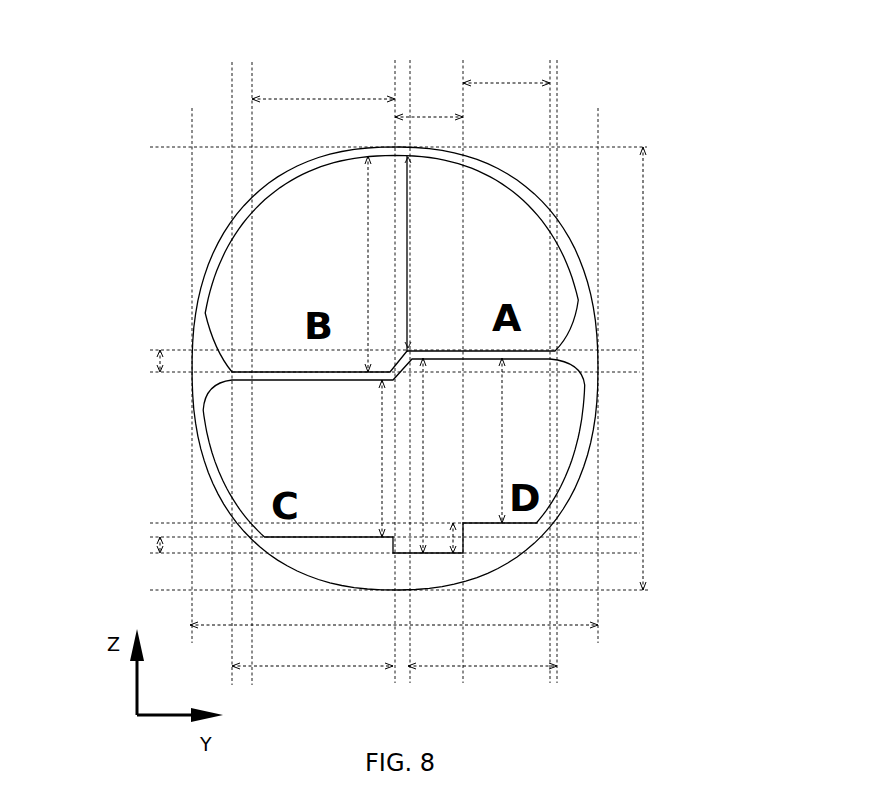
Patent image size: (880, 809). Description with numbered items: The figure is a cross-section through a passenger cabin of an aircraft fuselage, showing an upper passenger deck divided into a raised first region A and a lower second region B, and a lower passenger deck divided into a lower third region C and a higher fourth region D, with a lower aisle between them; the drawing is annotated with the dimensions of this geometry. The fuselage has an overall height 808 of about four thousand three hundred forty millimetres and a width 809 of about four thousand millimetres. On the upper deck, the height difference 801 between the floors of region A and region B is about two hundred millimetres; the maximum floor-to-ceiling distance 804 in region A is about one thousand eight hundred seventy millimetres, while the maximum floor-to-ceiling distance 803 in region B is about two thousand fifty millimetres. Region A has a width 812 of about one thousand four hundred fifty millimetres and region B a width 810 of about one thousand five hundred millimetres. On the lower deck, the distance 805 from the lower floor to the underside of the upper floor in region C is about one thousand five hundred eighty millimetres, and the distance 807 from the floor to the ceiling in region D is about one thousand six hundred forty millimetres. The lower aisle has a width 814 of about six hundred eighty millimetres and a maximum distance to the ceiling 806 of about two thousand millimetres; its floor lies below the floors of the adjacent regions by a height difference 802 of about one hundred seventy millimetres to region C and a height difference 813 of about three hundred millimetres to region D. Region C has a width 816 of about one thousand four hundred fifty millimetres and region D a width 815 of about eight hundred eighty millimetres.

The height difference 801 is at (157, 357).
The height difference 802 is at (157, 546).
The maximum distance from the floor to the ceiling 803 is at (368, 207).
The maximum distance from the floor to the ceiling 804 is at (410, 298).
The distance from the lower floor to the underside of the upper floor 805 is at (382, 405).
The maximum distance to the ceiling in the lower aisle region 806 is at (423, 436).
The distance from the lower floor to the ceiling 807 is at (502, 437).
The height of the fuselage 808 is at (643, 279).
The width of the fuselage 809 is at (297, 629).
The width of the second region B of the upper passenger deck 810 is at (297, 668).
The width of the first region A of the upper passenger deck 812 is at (480, 668).
The height difference 813 is at (455, 535).
The width of the lower aisle 814 is at (447, 117).
The width of the fourth region D of the lower passenger deck 815 is at (535, 83).
The width of the third region C of the lower passenger deck 816 is at (363, 99).